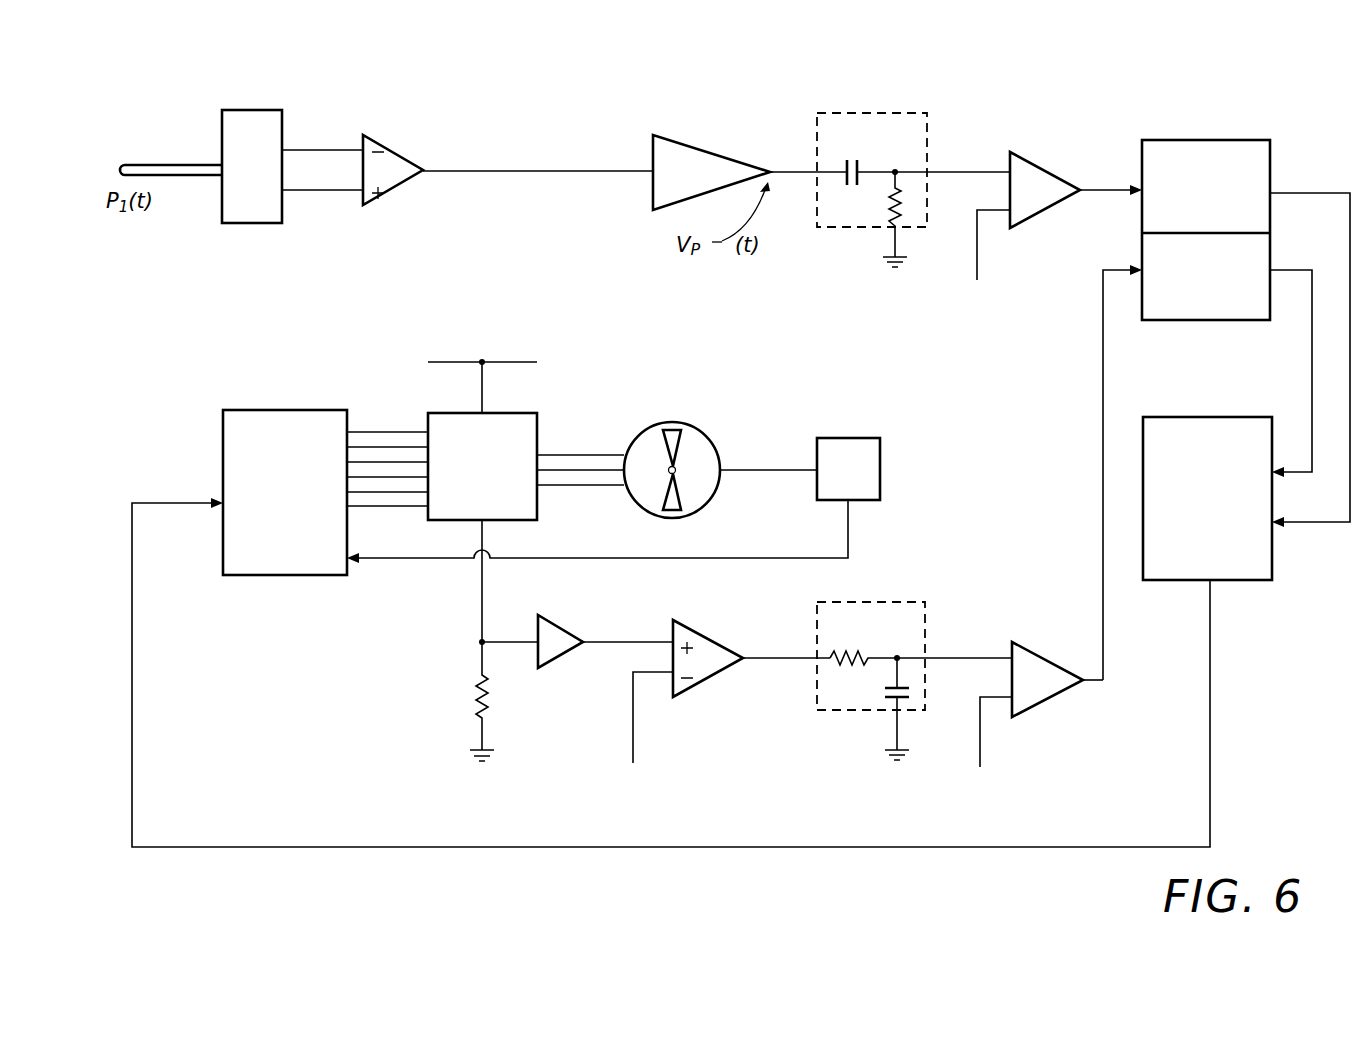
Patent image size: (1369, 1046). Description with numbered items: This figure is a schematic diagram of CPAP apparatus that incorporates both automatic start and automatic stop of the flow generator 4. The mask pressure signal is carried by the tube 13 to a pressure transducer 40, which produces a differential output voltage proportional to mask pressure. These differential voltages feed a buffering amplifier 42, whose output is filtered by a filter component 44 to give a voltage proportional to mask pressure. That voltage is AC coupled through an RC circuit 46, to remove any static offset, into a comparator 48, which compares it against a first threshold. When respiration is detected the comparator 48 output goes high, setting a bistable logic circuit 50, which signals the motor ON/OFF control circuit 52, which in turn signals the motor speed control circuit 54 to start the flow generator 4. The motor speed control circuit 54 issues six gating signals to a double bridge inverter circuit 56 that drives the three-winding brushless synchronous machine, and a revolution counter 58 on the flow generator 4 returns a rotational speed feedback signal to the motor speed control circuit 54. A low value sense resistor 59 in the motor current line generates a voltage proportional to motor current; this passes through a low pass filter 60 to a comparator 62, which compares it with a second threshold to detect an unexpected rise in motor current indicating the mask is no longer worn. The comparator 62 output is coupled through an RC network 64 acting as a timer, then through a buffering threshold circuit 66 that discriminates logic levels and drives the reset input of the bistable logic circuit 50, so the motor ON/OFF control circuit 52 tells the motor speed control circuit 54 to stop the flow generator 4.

The flow generator 4 is at (700, 430).
The tube 13 is at (124, 169).
The pressure transducer 40 is at (262, 110).
The buffering amplifier 42 is at (394, 150).
The filter component 44 is at (687, 146).
The RC circuit 46 is at (927, 128).
The comparator 48 is at (1045, 172).
The bistable logic circuit 50 is at (1190, 140).
The motor ON/OFF control circuit 52 is at (1250, 580).
The motor speed control circuit 54 is at (257, 410).
The double bridge inverter circuit 56 is at (540, 428).
The speed sensor 58 is at (880, 462).
The sense resistor 59 is at (468, 700).
The low pass filter 60 is at (568, 655).
The comparator 62 is at (704, 682).
The RC network 64 is at (850, 712).
The buffering threshold circuit 66 is at (1043, 658).